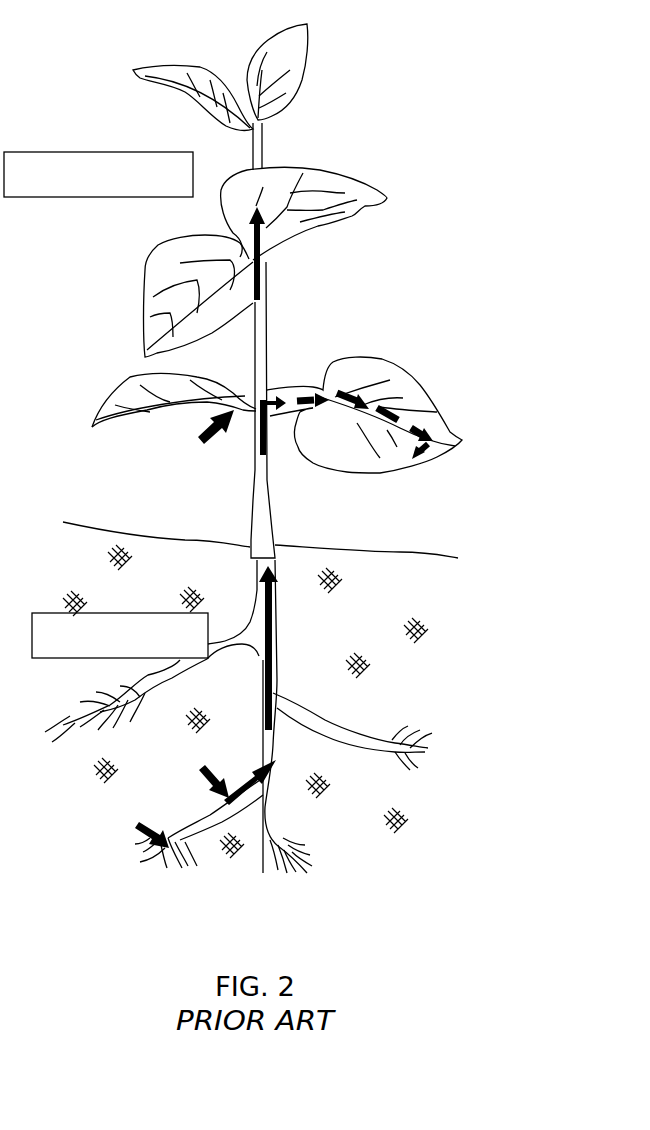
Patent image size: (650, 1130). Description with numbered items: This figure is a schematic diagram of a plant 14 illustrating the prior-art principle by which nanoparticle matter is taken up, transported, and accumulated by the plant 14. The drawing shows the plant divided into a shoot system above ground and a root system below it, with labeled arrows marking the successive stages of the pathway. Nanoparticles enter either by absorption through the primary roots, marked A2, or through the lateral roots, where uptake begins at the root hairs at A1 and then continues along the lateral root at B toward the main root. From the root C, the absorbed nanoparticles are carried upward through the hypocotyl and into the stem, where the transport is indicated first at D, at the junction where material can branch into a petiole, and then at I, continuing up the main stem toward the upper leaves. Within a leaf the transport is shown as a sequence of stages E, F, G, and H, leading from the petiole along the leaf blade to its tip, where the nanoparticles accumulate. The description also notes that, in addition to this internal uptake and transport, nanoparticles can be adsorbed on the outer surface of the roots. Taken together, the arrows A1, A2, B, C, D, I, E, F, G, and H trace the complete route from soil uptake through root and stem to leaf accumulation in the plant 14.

The plant 14 is at (484, 97).
The stem transport pathway I is at (269, 253).
The root C is at (257, 648).
The stem transport pathway D is at (259, 427).
The leaf transport pathway E is at (313, 415).
The leaf transport pathway F is at (353, 416).
The leaf transport pathway G is at (405, 427).
The leaf transport pathway H is at (411, 456).
The lateral root uptake A1 is at (131, 835).
The primary root uptake A2 is at (208, 767).
The lateral root transport B is at (250, 779).